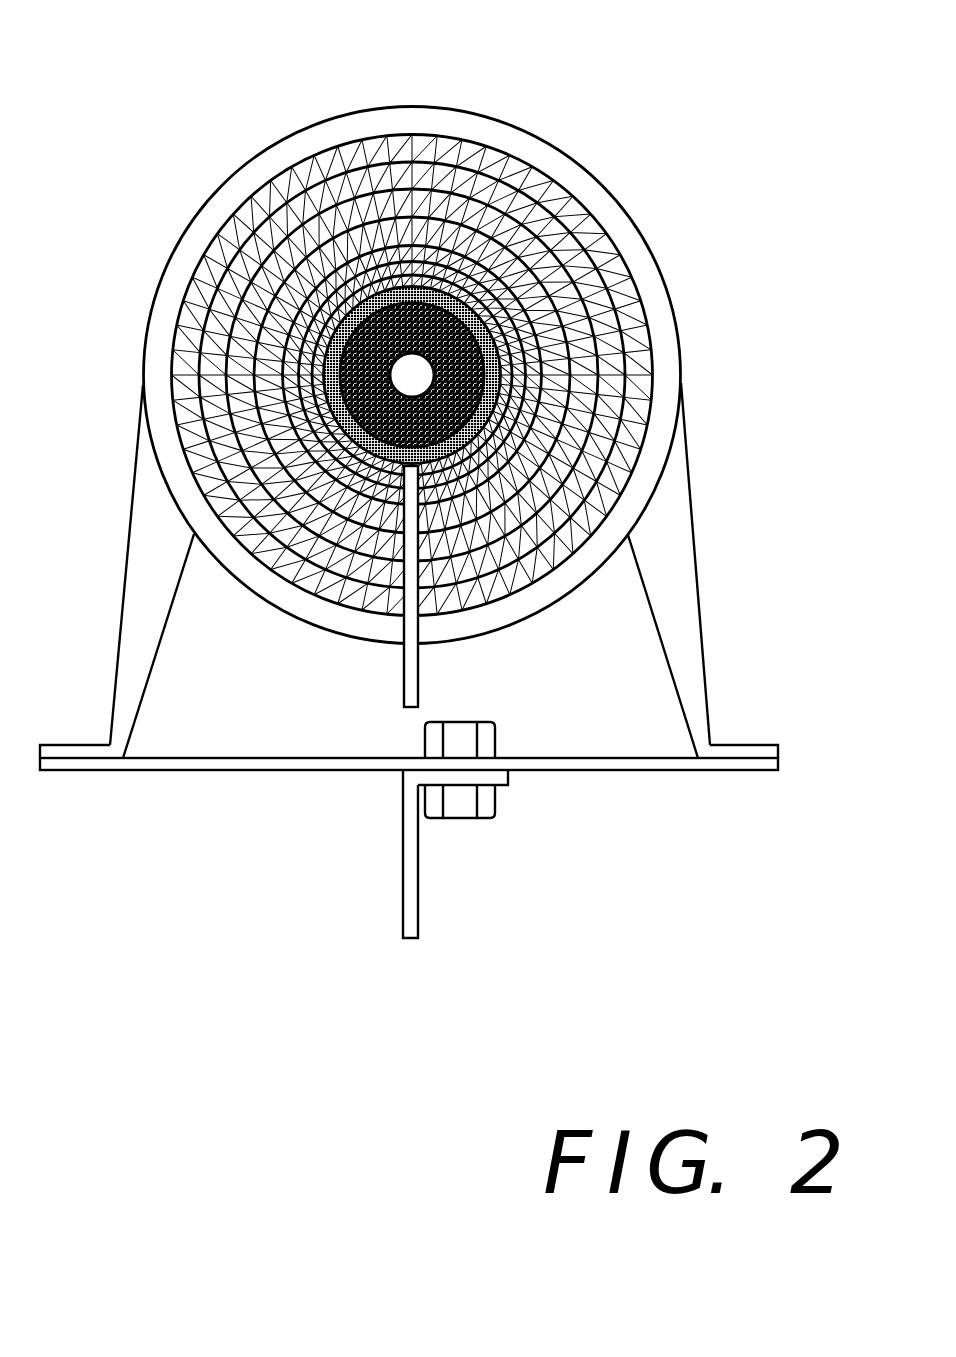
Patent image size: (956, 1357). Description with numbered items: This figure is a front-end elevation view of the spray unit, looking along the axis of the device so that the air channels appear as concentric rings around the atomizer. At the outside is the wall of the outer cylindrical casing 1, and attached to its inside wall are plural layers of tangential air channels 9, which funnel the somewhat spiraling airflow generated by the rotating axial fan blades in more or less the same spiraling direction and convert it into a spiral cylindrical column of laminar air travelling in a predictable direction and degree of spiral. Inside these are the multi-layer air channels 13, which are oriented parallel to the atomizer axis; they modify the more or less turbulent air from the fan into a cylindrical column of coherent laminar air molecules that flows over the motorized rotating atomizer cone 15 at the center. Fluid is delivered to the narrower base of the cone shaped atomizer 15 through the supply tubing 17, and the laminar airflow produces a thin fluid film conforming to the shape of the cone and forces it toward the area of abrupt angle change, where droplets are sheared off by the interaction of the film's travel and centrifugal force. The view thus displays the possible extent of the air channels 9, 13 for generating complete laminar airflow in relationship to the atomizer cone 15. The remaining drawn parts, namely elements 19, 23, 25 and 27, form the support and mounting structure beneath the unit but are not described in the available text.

The outer cylindrical casing 1 is at (316, 123).
The tangential air channels 9 is at (445, 203).
The multi-layer air channels 13 is at (494, 306).
The cone shaped atomizer 15 is at (327, 303).
The supply tubing 17 is at (420, 680).
The support legs 19 is at (700, 583).
The base plate 23 is at (315, 770).
The mounting nuts 25 is at (488, 817).
The threaded rod end 27 is at (403, 918).